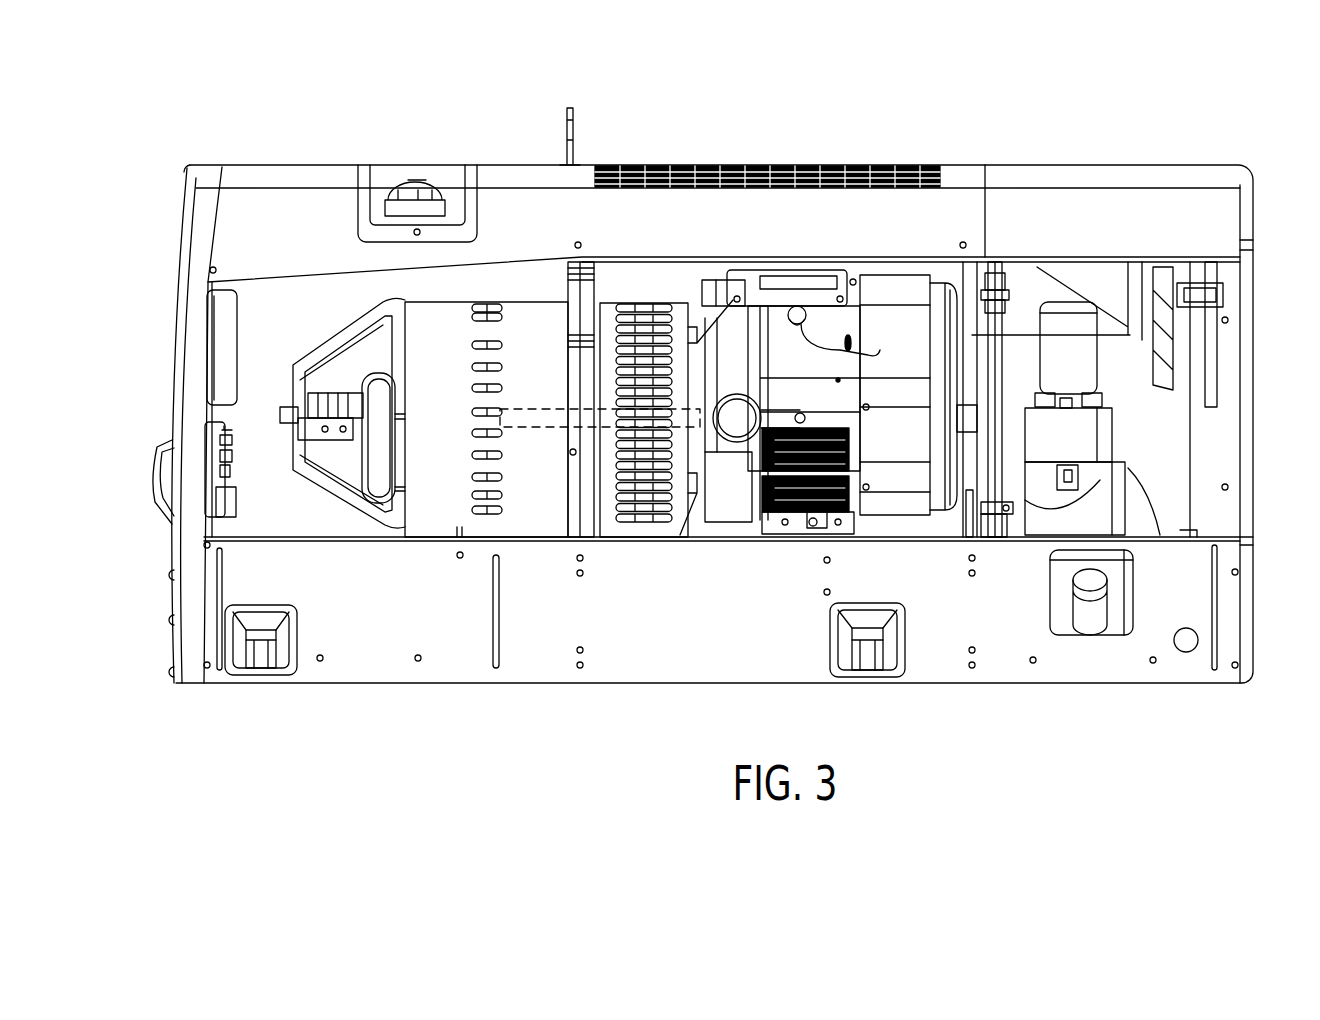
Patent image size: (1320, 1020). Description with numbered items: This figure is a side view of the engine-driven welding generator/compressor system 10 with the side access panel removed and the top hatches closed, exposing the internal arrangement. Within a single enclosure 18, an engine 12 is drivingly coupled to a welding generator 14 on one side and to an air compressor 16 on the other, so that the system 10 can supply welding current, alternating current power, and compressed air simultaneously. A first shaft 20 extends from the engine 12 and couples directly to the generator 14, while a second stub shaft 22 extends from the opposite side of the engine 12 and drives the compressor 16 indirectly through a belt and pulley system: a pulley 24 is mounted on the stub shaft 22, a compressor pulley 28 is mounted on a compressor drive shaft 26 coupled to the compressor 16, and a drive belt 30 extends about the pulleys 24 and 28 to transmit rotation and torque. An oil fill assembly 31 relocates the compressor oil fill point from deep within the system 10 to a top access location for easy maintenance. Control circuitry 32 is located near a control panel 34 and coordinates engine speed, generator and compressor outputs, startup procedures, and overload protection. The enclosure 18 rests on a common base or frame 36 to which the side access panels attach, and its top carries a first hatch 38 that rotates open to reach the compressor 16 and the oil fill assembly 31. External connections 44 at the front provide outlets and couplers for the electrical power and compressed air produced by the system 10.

The engine-driven welding generator/compressor system 10 is at (1112, 113).
The engine 12 is at (892, 287).
The welding generator 14 is at (527, 318).
The air compressor 16 is at (1133, 475).
The enclosure 18 is at (333, 140).
The first shaft 20 is at (537, 427).
The second shaft 22 is at (1020, 415).
The pulley 24 is at (1020, 390).
The compressor drive shaft 26 is at (1010, 523).
The compressor pulley 28 is at (968, 520).
The drive belt 30 is at (982, 480).
The oil fill assembly 31 is at (1012, 300).
The control circuitry 32 is at (240, 311).
The control panel 34 is at (183, 212).
The frame 36 is at (353, 538).
The first hatch 38 is at (1030, 162).
The external connections 44 is at (140, 462).